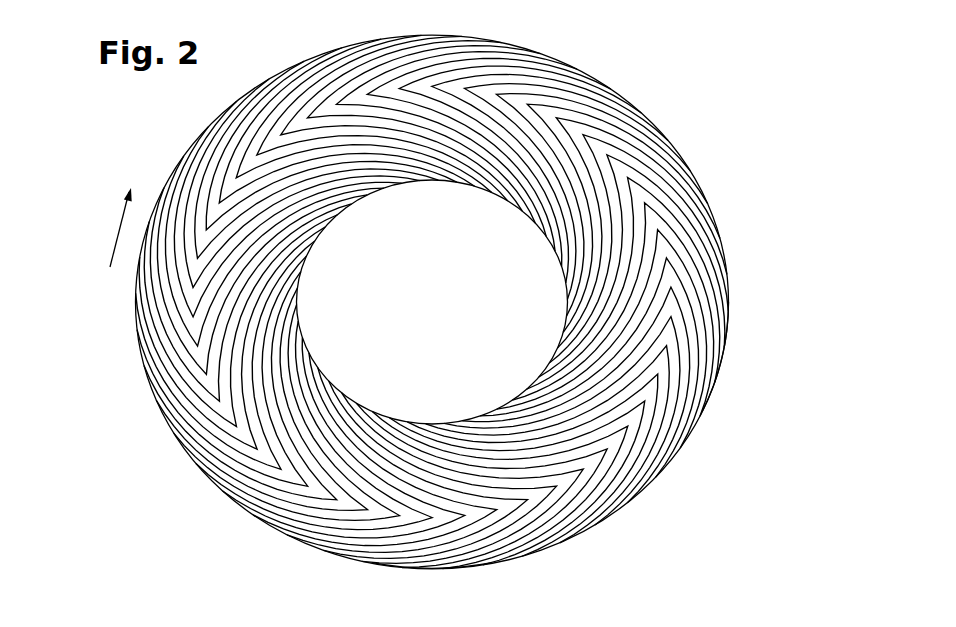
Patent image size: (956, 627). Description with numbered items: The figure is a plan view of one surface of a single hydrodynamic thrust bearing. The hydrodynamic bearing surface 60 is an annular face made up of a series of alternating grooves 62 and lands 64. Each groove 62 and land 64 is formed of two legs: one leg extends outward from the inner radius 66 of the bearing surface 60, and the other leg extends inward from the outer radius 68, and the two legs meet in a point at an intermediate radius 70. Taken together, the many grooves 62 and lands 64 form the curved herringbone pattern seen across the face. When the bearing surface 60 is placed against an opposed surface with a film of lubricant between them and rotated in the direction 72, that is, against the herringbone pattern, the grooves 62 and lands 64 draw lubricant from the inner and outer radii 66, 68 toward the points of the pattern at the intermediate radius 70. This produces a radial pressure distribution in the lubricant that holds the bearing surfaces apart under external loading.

The hydrodynamic bearing surface 60 is at (724, 62).
The grooves 62 is at (727, 272).
The lands 64 is at (710, 377).
The inner radius 66 is at (358, 400).
The outer radius 68 is at (450, 571).
The intermediate radius 70 is at (635, 417).
The direction of rotation 72 is at (112, 232).